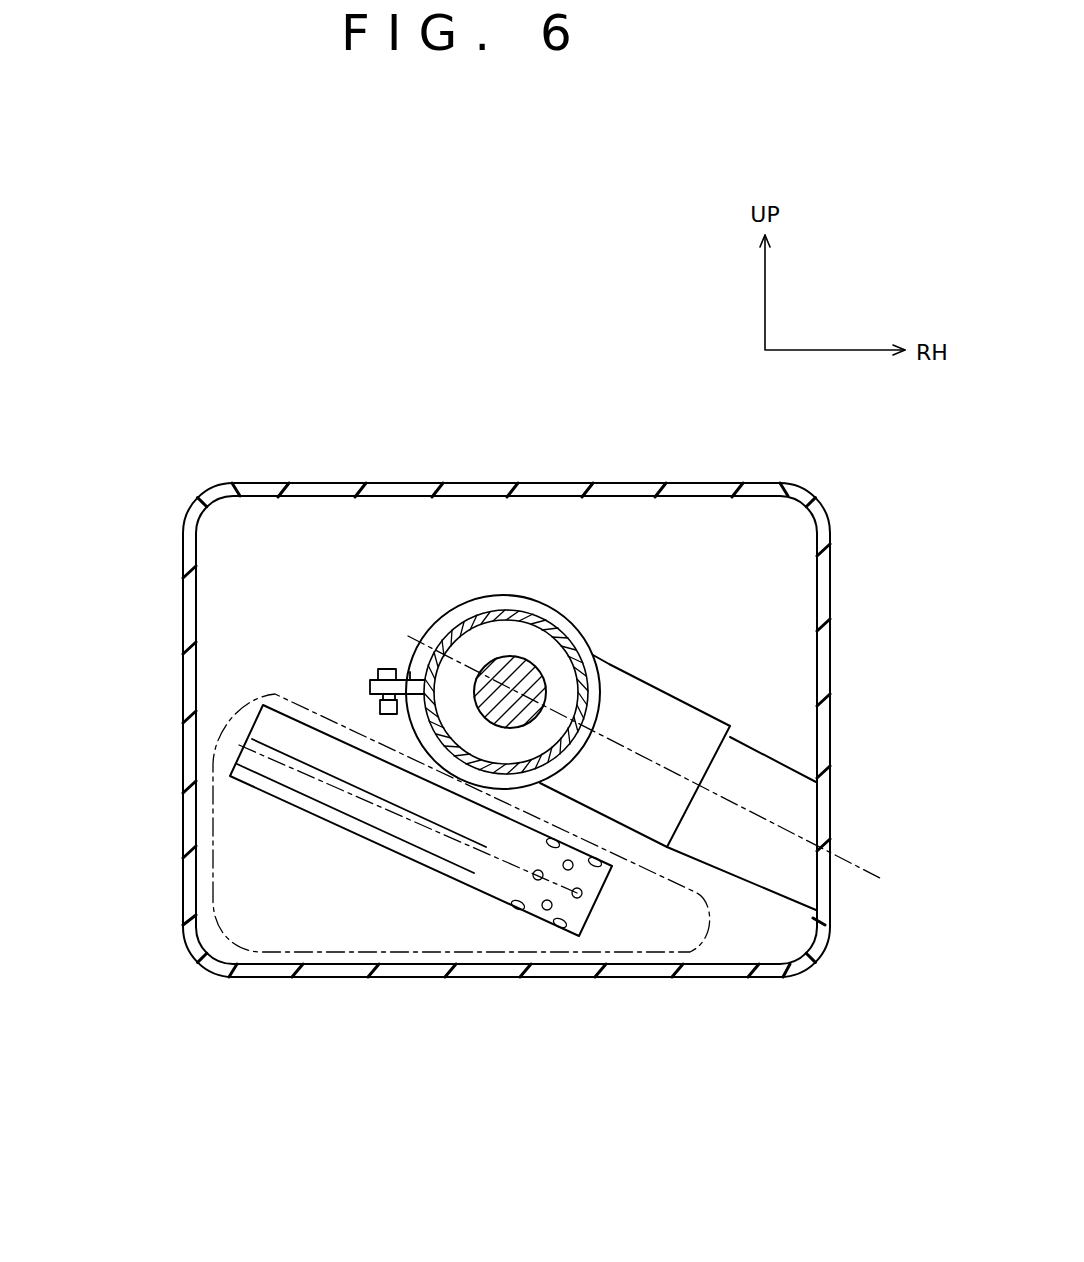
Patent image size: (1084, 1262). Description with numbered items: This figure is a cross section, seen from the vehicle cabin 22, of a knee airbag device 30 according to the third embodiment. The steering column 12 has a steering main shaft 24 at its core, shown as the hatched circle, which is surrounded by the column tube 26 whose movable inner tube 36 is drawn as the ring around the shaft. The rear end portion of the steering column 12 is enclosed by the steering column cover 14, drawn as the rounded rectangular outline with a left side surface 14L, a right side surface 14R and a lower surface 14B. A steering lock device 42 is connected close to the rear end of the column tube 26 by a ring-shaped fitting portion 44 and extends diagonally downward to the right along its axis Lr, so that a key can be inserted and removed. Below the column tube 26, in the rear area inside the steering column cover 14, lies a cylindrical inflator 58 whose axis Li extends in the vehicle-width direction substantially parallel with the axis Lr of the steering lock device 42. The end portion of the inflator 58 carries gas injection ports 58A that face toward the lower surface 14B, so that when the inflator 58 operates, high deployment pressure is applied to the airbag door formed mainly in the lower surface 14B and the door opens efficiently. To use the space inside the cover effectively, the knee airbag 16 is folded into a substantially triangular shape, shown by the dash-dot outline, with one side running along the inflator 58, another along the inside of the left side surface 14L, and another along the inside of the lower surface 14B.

The steering column 12 is at (573, 437).
The steering column cover 14 is at (513, 487).
The left side surface 14L is at (180, 877).
The right side surface 14R is at (830, 918).
The lower surface 14B is at (620, 982).
The knee airbag 16 is at (421, 830).
The vehicle cabin 22 is at (488, 1143).
The steering main shaft 24 is at (505, 657).
The column tube 26 is at (549, 656).
The knee airbag device 30 is at (428, 1020).
The inner tube 36 is at (545, 603).
The steering lock device 42 is at (677, 697).
The fitting portion 44 is at (437, 625).
The inflator 58 is at (352, 838).
The gas injection ports 58A is at (578, 898).
The axis of the steering lock device Lr is at (845, 857).
The axis of the inflator Li is at (632, 910).